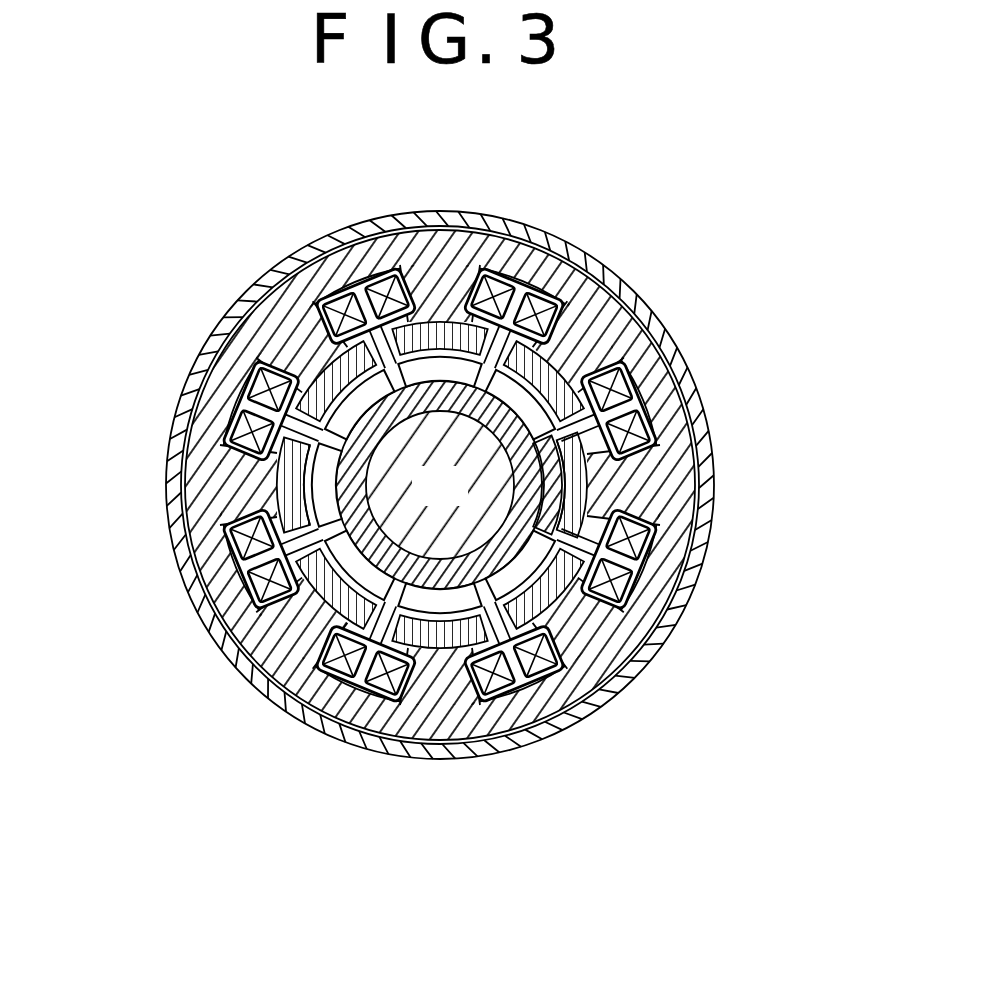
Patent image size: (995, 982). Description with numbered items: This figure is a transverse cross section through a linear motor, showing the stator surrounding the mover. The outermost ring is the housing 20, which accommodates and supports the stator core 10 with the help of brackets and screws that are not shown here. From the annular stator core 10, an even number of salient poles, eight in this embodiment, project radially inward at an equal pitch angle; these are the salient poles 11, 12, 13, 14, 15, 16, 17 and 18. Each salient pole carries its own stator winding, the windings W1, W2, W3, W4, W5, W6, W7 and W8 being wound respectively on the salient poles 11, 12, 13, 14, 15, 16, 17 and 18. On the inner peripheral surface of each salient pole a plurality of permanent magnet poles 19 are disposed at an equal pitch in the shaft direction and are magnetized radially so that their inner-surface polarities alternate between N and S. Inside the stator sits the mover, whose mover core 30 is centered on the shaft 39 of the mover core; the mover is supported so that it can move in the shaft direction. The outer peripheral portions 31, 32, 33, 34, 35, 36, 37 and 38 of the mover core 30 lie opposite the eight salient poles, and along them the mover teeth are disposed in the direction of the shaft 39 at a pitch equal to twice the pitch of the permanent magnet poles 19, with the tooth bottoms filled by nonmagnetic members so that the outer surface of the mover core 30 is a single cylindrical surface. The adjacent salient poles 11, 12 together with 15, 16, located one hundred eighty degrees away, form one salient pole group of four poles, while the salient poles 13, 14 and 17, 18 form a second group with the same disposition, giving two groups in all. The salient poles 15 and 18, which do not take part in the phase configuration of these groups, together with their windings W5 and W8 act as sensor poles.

The stator core 10 is at (612, 612).
The salient pole 11 is at (441, 365).
The salient pole 12 is at (530, 392).
The salient pole 13 is at (622, 480).
The salient pole 14 is at (532, 580).
The salient pole 15 is at (442, 605).
The salient pole 16 is at (360, 580).
The salient pole 17 is at (322, 500).
The salient pole 18 is at (354, 395).
The permanent magnet poles 19 is at (580, 467).
The housing 20 is at (556, 742).
The mover core 30 is at (541, 490).
The outer peripheral portion of the mover core 31 is at (441, 300).
The outer peripheral portion of the mover core 32 is at (570, 335).
The outer peripheral portion of the mover core 33 is at (640, 545).
The outer peripheral portion of the mover core 34 is at (560, 645).
The outer peripheral portion of the mover core 35 is at (432, 665).
The outer peripheral portion of the mover core 36 is at (338, 592).
The outer peripheral portion of the mover core 37 is at (248, 516).
The outer peripheral portion of the mover core 38 is at (316, 322).
The shaft 39 is at (417, 505).
The stator winding W1 is at (385, 290).
The stator winding W2 is at (528, 300).
The stator winding W3 is at (630, 433).
The stator winding W4 is at (628, 560).
The stator winding W5 is at (510, 672).
The stator winding W6 is at (370, 665).
The stator winding W7 is at (258, 576).
The stator winding W8 is at (266, 380).